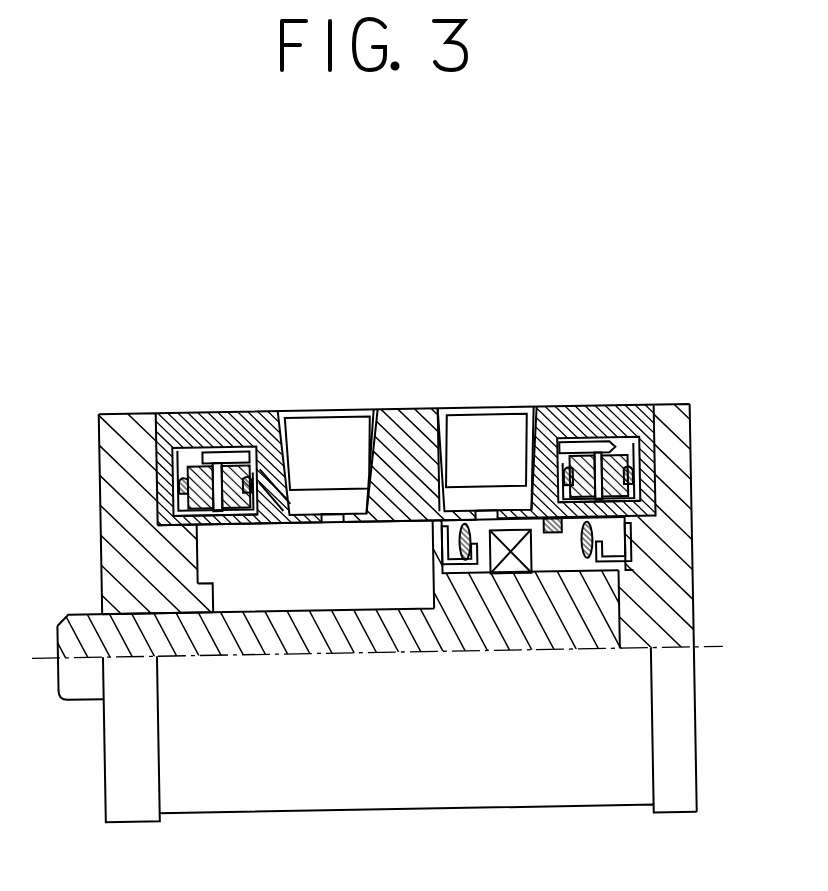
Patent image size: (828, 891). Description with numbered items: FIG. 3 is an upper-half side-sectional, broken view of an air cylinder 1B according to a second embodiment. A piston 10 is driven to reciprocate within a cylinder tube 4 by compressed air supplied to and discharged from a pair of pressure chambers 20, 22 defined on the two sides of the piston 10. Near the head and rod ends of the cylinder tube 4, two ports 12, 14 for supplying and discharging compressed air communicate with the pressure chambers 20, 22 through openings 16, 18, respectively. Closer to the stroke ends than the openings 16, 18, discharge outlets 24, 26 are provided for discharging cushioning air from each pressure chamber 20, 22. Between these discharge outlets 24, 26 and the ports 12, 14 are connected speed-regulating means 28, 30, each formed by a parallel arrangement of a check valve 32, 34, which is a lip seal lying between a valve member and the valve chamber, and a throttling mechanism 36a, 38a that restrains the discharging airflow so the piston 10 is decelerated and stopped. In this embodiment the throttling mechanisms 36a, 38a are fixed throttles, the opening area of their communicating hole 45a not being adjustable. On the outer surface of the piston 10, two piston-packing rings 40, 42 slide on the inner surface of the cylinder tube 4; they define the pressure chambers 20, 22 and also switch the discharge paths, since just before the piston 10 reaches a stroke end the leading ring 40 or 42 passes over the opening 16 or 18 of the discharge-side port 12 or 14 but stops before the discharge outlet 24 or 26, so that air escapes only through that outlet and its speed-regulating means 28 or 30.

The air cylinder 1B is at (441, 300).
The cylinder tube 4 is at (411, 420).
The piston 10 is at (527, 622).
The port 12 is at (505, 427).
The port 14 is at (333, 424).
The opening 16 is at (488, 511).
The opening 18 is at (330, 526).
The pressure chamber 20 is at (628, 579).
The pressure chamber 22 is at (220, 592).
The discharge outlet 24 is at (652, 514).
The discharge outlet 26 is at (231, 525).
The speed-regulating means 28 is at (636, 402).
The speed-regulating means 30 is at (205, 396).
The check valve 32 is at (650, 478).
The check valve 34 is at (184, 479).
The throttling mechanism 36a is at (599, 443).
The throttling mechanism 38a is at (216, 455).
The piston-packing ring 40 is at (646, 552).
The piston-packing ring 42 is at (461, 546).
The communicating hole 45a is at (195, 462).